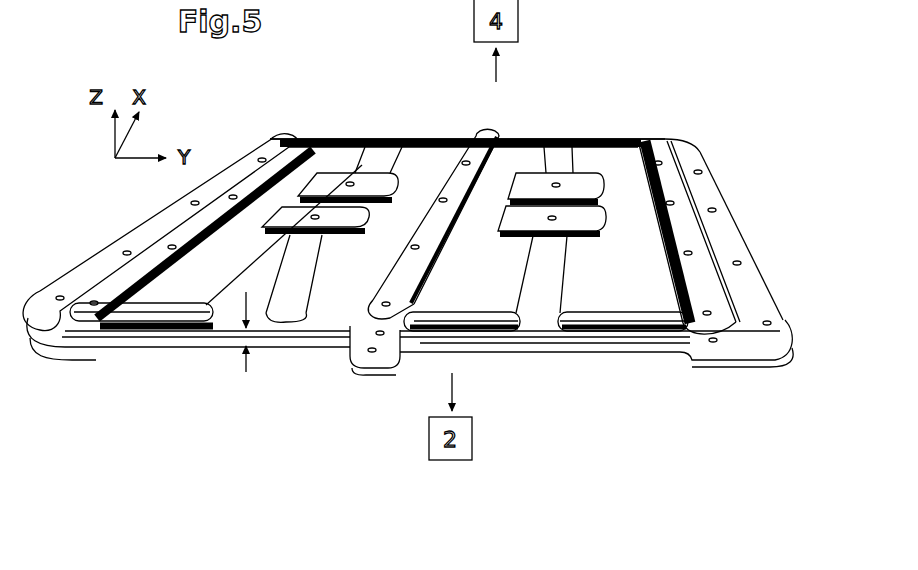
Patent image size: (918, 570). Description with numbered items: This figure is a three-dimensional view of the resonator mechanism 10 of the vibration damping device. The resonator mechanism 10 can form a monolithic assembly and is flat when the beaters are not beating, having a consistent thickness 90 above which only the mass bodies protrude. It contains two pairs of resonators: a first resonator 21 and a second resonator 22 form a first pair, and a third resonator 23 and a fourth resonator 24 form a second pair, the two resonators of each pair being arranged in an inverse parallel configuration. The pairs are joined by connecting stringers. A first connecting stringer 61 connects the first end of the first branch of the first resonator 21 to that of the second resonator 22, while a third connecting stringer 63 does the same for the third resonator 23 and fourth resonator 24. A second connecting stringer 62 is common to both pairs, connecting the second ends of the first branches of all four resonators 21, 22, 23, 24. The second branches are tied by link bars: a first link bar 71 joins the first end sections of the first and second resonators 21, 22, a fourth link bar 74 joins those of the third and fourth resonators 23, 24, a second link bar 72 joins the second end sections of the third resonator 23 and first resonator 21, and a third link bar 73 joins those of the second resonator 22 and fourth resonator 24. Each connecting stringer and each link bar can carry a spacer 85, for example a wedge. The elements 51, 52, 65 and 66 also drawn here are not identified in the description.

The resonator mechanism 10 is at (738, 154).
The first resonator 21 is at (232, 386).
The second resonator 22 is at (390, 124).
The third resonator 23 is at (565, 364).
The fourth resonator 24 is at (584, 102).
The first region 51 is at (266, 440).
The second region 52 is at (527, 422).
The first connecting stringer 61 is at (234, 247).
The second connecting stringer 62 is at (452, 270).
The third connecting stringer 63 is at (656, 287).
The first clamp 65 is at (386, 228).
The second clamp 66 is at (646, 224).
The first link bar 71 is at (97, 266).
The second link bar 72 is at (358, 372).
The third link bar 73 is at (472, 130).
The fourth link bar 74 is at (758, 268).
The spacer 85 is at (300, 137).
The thickness 90 is at (252, 366).